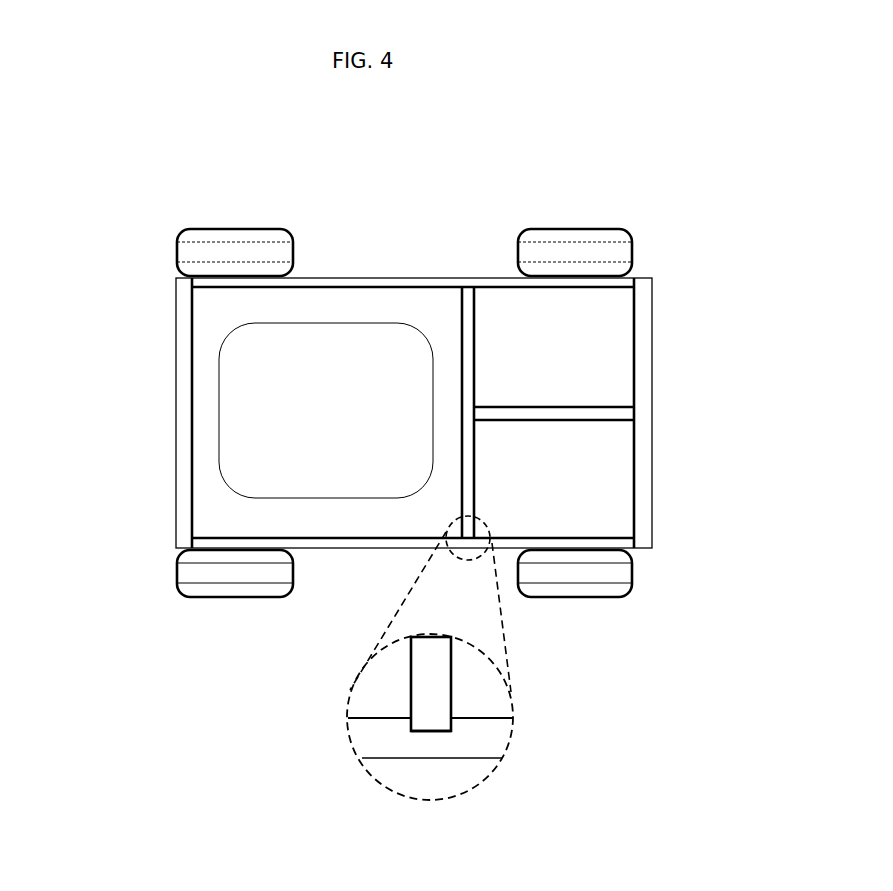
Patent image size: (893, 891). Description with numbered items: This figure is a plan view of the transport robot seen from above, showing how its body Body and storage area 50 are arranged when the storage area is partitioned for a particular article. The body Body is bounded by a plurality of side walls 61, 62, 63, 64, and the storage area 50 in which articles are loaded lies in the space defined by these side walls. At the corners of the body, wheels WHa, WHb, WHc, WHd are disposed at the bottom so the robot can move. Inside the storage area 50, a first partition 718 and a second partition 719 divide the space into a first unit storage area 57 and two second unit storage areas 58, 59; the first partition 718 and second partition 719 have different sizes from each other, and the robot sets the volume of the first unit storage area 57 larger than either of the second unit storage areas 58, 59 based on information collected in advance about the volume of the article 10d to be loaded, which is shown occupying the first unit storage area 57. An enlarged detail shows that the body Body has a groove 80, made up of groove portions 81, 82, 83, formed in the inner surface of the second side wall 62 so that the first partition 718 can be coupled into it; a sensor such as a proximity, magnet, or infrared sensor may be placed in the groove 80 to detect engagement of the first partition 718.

The body Body is at (111, 210).
The storage area 50 is at (621, 298).
The first unit storage area 57 is at (212, 387).
The second unit storage area 58 is at (605, 348).
The second unit storage area 59 is at (605, 497).
The side wall 61 is at (378, 277).
The second side wall 62 is at (330, 549).
The side wall 63 is at (184, 311).
The side wall 64 is at (643, 308).
The first partition 718 is at (469, 287).
The second partition 719 is at (623, 413).
The article 10d is at (245, 452).
The groove 80 is at (402, 729).
The groove portion 81 is at (365, 718).
The groove portion 82 is at (427, 733).
The groove portion 83 is at (480, 718).
The wheel WHa is at (229, 592).
The wheel WHb is at (229, 236).
The wheel WHc is at (583, 592).
The wheel WHd is at (577, 236).